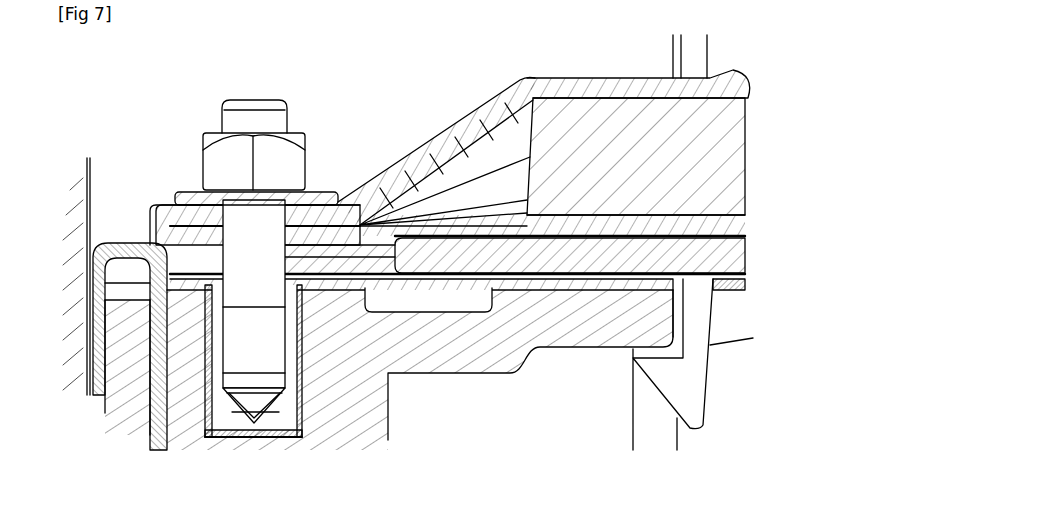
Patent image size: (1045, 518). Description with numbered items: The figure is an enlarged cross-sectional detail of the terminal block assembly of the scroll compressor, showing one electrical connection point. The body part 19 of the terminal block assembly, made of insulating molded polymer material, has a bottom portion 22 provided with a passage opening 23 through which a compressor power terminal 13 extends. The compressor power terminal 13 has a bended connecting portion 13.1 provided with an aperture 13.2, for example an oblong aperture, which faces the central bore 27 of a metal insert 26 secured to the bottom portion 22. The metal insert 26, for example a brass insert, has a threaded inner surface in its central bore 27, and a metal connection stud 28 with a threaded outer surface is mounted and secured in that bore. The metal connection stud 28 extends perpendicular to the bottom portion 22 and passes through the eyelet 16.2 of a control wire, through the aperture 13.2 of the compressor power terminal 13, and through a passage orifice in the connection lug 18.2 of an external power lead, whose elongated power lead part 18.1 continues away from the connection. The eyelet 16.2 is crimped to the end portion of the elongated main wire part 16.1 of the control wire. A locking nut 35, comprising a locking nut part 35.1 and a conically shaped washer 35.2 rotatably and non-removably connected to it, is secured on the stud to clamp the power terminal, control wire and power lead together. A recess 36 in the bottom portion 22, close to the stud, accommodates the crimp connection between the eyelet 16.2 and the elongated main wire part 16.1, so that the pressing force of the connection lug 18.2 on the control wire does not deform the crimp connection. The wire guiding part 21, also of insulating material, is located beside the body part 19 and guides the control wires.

The compressor power terminal 13 is at (122, 398).
The bended connecting portion 13.1 is at (140, 247).
The aperture 13.2 is at (213, 223).
The elongated main wire part 16.1 is at (693, 255).
The eyelet 16.2 is at (383, 279).
The elongated power lead part 18.1 is at (642, 125).
The connection lug 18.2 is at (475, 122).
The body part 19 is at (360, 410).
The wire guiding part 21 is at (692, 383).
The bottom portion 22 is at (627, 320).
The passage opening 23 is at (166, 408).
The metal insert 26 is at (260, 348).
The central bore 27 is at (237, 395).
The metal connection stud 28 is at (297, 347).
The locking nut 35 is at (289, 135).
The locking nut part 35.1 is at (285, 152).
The conically shaped washer 35.2 is at (315, 200).
The recess 36 is at (458, 305).